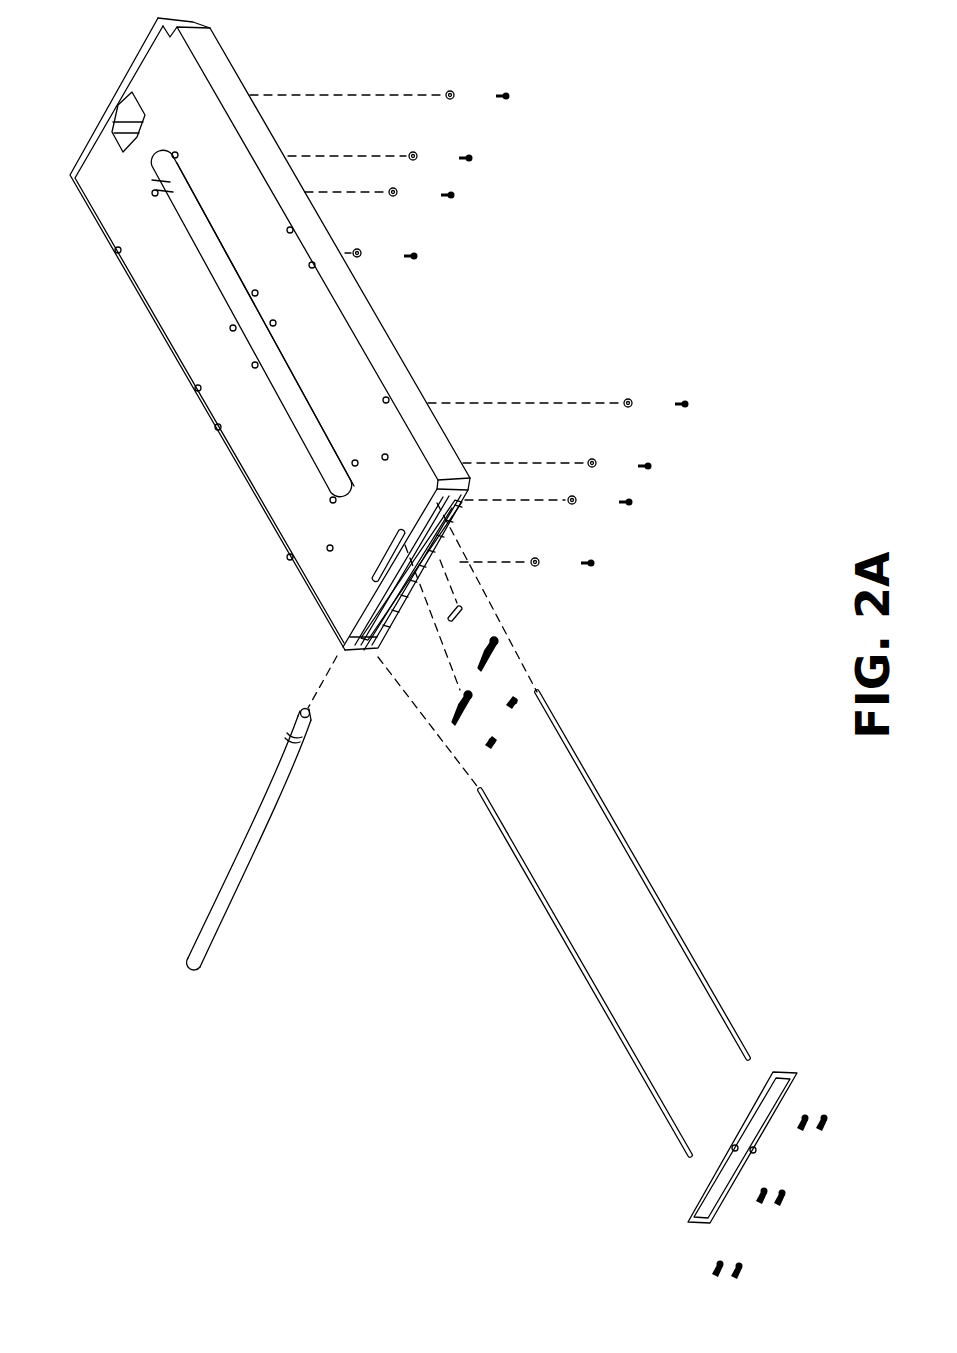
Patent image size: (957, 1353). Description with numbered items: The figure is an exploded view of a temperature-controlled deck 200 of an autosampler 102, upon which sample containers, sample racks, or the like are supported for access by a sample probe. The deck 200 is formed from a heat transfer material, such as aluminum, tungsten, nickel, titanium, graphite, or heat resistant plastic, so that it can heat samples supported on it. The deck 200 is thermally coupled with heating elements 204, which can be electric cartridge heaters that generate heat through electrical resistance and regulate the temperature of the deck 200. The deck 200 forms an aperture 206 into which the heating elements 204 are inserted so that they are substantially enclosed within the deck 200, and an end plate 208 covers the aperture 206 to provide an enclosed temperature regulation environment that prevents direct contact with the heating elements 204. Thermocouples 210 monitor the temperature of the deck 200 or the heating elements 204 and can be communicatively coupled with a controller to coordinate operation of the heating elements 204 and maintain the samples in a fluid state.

The autosampler 102 is at (196, 572).
The temperature-controlled deck 200 is at (88, 208).
The heating elements 204 is at (646, 890).
The aperture 206 is at (451, 506).
The end plate 208 is at (690, 1222).
The thermocouples 210 is at (488, 642).